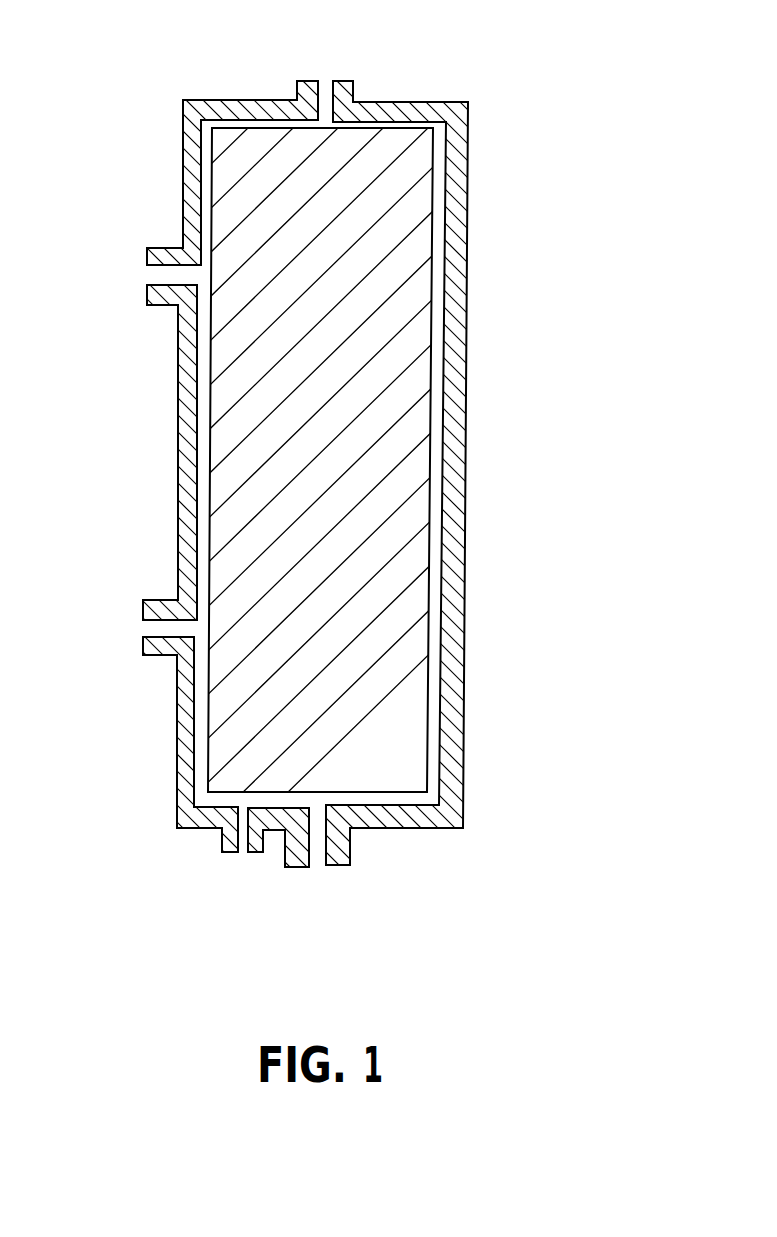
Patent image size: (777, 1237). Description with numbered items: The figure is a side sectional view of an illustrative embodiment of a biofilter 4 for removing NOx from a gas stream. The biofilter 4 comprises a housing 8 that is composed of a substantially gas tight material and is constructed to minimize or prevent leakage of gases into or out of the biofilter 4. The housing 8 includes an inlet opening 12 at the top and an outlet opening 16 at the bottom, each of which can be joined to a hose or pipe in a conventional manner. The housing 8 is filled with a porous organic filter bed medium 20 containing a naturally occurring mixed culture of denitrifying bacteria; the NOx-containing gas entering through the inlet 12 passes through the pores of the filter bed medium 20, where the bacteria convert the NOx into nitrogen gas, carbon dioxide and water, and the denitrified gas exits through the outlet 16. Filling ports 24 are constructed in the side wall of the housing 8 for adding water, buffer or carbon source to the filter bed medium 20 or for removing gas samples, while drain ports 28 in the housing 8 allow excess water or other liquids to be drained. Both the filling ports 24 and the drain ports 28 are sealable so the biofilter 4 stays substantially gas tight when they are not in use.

The biofilter 4 is at (520, 474).
The housing 8 is at (470, 172).
The inlet opening 12 is at (329, 73).
The outlet opening 16 is at (318, 863).
The filter bed medium 20 is at (368, 517).
The filling ports 24 is at (145, 273).
The drain ports 28 is at (243, 853).